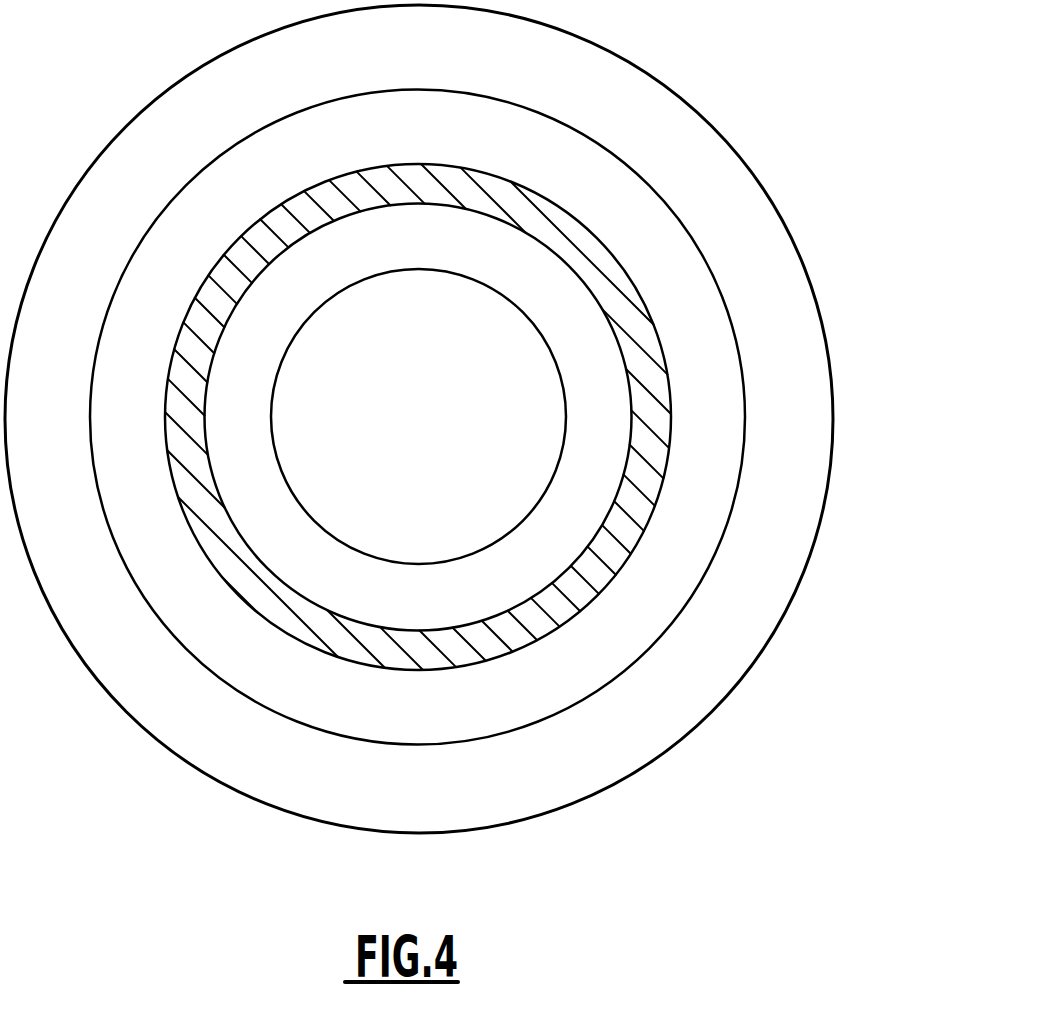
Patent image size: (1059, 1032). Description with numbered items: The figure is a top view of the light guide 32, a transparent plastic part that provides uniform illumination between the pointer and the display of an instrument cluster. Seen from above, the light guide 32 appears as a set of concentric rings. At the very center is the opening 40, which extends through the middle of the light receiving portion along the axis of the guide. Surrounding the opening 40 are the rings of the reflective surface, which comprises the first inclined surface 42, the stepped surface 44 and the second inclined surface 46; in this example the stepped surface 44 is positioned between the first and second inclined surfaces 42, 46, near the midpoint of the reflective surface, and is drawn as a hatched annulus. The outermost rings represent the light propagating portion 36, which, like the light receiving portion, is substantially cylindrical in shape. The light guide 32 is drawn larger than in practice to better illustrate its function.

The light guide 32 is at (768, 73).
The light propagating portion 36 is at (833, 392).
The second inclined surface 46 is at (223, 186).
The stepped surface 44 is at (305, 217).
The first inclined surface 42 is at (423, 243).
The opening 40 is at (440, 423).